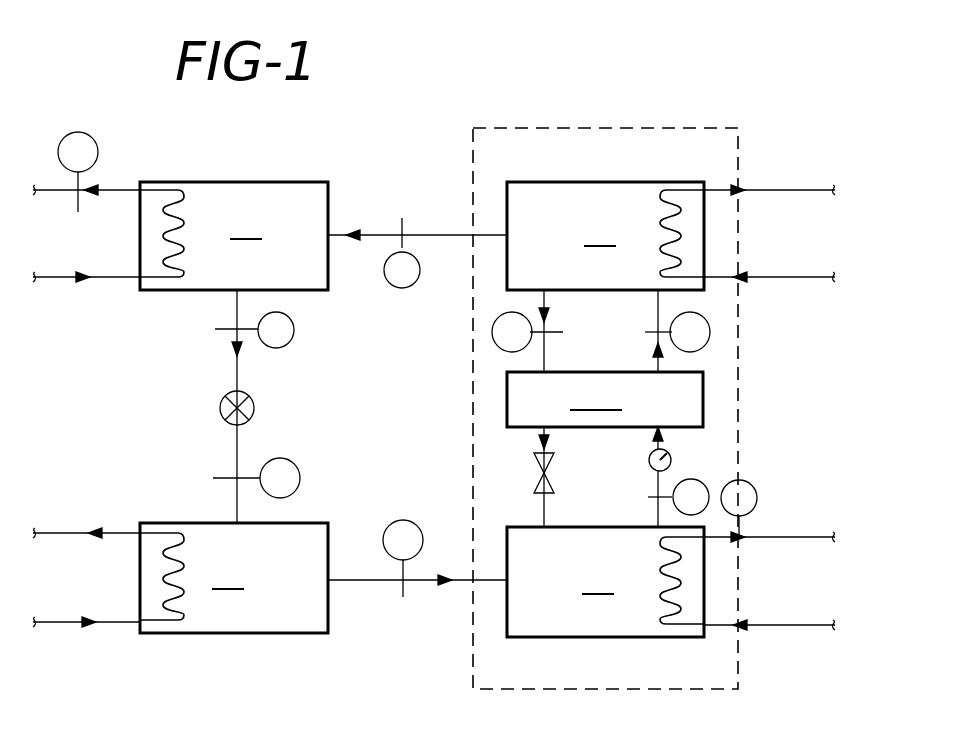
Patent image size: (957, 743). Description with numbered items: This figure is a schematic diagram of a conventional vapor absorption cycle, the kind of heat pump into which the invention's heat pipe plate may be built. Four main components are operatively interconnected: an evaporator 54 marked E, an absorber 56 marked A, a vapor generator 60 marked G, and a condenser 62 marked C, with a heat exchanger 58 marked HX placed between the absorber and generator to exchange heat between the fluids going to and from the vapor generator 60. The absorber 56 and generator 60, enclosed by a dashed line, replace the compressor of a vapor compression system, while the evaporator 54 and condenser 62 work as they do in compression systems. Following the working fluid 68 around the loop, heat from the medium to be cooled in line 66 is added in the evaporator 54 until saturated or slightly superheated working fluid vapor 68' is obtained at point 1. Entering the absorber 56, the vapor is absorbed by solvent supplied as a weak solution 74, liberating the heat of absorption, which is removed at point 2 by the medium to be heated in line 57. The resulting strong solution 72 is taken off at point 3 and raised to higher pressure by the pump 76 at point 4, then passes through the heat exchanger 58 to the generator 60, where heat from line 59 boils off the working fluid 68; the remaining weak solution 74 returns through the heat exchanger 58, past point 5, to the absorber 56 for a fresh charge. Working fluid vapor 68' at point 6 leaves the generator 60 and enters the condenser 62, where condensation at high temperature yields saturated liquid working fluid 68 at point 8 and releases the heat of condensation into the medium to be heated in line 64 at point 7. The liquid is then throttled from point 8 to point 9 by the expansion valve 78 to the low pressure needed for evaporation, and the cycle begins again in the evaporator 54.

The evaporator 54 is at (267, 634).
The absorber 56 is at (563, 638).
The line for medium to be heated 57 is at (800, 627).
The heat exchanger 58 is at (507, 389).
The heat source line 59 is at (782, 280).
The vapor generator 60 is at (578, 182).
The condenser 62 is at (273, 182).
The line for medium to be heated 64 is at (52, 280).
The line for medium to be cooled 66 is at (58, 624).
The working fluid 68 is at (185, 406).
The working fluid vapor 68' is at (417, 398).
The strong solution 72 is at (657, 510).
The weak solution 74 is at (548, 353).
The pump 76 is at (649, 460).
The expansion valve 78 is at (220, 408).
The point 1 is at (403, 558).
The point 2 is at (739, 508).
The point 3 is at (678, 497).
The point 4 is at (677, 332).
The point 5 is at (527, 332).
The point 6 is at (402, 253).
The point 7 is at (78, 172).
The point 8 is at (254, 330).
The point 9 is at (256, 478).